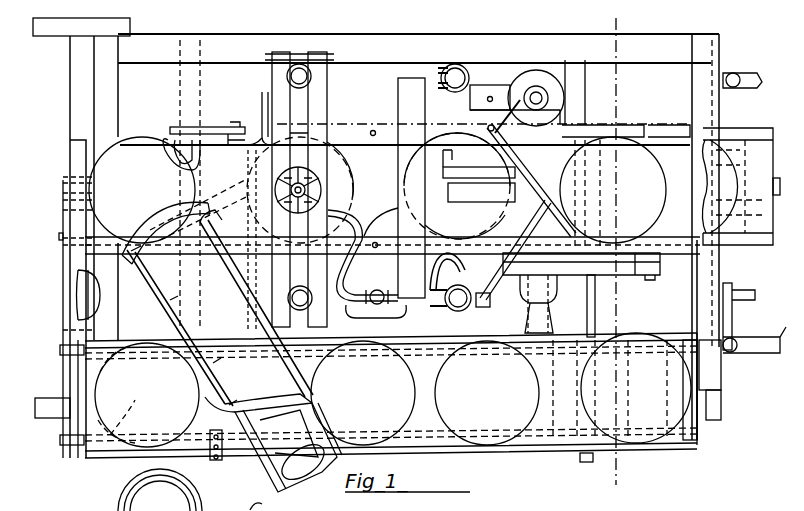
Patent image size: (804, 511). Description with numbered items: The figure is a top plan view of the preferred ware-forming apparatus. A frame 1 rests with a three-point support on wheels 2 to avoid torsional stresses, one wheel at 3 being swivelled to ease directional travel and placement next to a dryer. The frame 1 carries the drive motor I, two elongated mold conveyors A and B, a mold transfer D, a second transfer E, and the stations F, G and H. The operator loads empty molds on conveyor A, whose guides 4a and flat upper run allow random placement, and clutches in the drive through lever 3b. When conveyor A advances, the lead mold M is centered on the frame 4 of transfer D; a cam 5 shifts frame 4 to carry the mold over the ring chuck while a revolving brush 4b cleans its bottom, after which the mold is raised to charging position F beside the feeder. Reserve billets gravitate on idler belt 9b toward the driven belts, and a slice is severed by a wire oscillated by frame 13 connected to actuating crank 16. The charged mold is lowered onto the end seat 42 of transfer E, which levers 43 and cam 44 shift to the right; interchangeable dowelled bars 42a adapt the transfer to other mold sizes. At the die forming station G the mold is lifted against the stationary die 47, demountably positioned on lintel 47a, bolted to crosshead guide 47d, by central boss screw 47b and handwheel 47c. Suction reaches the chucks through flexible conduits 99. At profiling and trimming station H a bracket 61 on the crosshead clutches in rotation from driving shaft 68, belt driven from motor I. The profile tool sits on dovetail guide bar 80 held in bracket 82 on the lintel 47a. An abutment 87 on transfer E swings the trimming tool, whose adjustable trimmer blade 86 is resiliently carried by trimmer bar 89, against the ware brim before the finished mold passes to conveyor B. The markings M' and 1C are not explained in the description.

The frame 1 is at (66, 22).
The wheels 2 is at (54, 38).
The swivelled wheel 3 is at (616, 18).
The lever 3b is at (733, 311).
The frame of transfer D 4 is at (84, 364).
The guides 4a is at (418, 343).
The revolving brush 4b is at (76, 285).
The cam 5 is at (76, 160).
The idler belt 9b is at (326, 456).
The frame 13 is at (120, 500).
The actuating crank 16 is at (202, 364).
The end seat 42 is at (265, 105).
The dowelled bars 42a is at (366, 262).
The levers 43 is at (208, 128).
The cam 44 is at (168, 136).
The stationary die 47 is at (335, 162).
The lintel 47a is at (327, 80).
The central boss screw 47b is at (273, 150).
The handwheel 47c is at (276, 192).
The crosshead guide 47d is at (300, 64).
The bracket 61 is at (483, 95).
The driving shaft 68 is at (548, 96).
The dovetail guide bar 80 is at (472, 306).
The bracket 82 is at (440, 180).
The trimmer blade 86 is at (514, 220).
The abutment 87 is at (606, 266).
The trimmer bar 89 is at (510, 240).
The flexible conduits 99 is at (352, 308).
The mold conveyor A is at (700, 432).
The mold conveyor B is at (745, 135).
The mold transfer D is at (147, 395).
The transfer E is at (360, 137).
The charging position F is at (142, 190).
The die forming station G is at (300, 190).
The profiling and trimming station H is at (457, 186).
The drive motor I is at (615, 145).
The lead mold M is at (501, 389).
The motor M' is at (613, 193).
The unit 1C is at (247, 502).